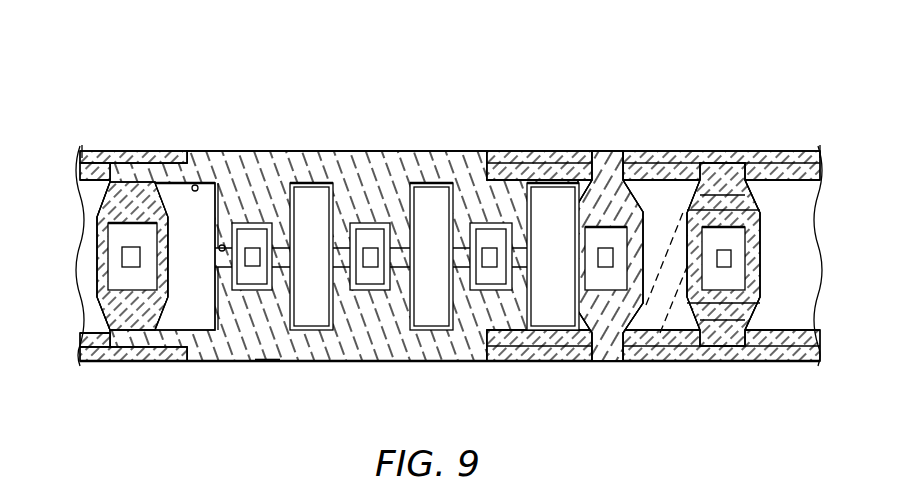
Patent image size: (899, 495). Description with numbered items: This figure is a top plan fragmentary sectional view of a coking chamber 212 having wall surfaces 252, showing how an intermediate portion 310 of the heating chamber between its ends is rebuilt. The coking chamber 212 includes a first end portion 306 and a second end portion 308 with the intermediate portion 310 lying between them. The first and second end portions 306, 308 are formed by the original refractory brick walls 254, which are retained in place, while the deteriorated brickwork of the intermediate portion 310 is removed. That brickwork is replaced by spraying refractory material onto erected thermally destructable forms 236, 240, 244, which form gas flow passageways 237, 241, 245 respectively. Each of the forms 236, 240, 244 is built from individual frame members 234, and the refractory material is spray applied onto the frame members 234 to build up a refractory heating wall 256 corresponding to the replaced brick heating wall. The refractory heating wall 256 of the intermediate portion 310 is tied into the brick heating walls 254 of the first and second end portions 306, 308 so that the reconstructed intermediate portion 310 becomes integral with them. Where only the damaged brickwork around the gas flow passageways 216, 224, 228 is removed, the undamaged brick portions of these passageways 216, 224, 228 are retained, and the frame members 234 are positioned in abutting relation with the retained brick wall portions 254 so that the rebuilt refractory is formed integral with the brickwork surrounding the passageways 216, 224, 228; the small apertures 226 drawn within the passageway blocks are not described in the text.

The coking chamber 212 is at (233, 88).
The gas flow passageway 216 is at (200, 250).
The gas flow passageway 224 is at (597, 277).
The contact aperture 226 is at (130, 257).
The gas flow passageway 228 is at (667, 263).
The frame member 234 is at (170, 357).
The thermally destructable form 236 is at (363, 220).
The gas flow passageway 237 is at (258, 222).
The thermally destructable form 240 is at (224, 271).
The gas flow passageway 241 is at (222, 245).
The thermally destructable form 244 is at (317, 178).
The gas flow passageway 245 is at (195, 184).
The wall surface 252 is at (410, 150).
The refractory brick wall 254 is at (128, 160).
The refractory heating wall 256 is at (265, 362).
The first end portion 306 is at (150, 143).
The second end portion 308 is at (698, 140).
The intermediate portion 310 is at (425, 140).